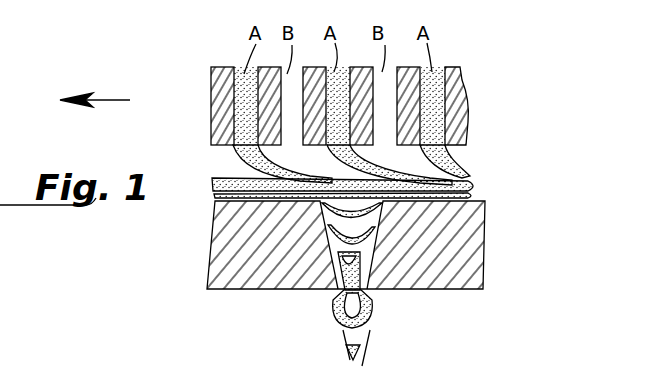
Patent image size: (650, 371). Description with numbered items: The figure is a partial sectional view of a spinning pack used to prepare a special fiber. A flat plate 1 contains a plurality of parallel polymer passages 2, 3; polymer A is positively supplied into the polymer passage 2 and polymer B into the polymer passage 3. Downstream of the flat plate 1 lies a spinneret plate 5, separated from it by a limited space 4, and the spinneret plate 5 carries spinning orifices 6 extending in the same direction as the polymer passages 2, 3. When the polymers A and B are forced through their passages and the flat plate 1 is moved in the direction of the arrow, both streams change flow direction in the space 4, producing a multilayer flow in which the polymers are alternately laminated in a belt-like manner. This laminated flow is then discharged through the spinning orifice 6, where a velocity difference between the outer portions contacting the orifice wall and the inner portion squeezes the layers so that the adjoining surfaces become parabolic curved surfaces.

The flat plate 1 is at (457, 95).
The polymer passage 2 is at (248, 103).
The polymer passage 3 is at (293, 127).
The limited space 4 is at (468, 186).
The spinneret plate 5 is at (257, 289).
The spinning orifice 6 is at (375, 240).